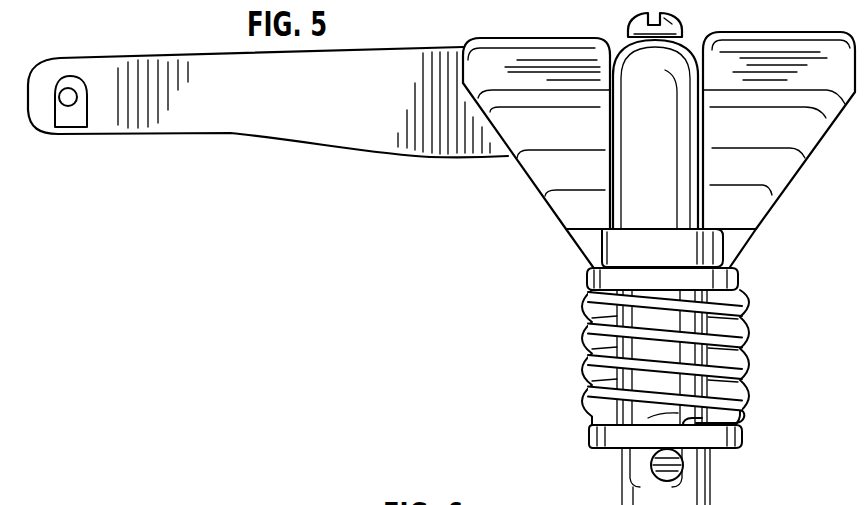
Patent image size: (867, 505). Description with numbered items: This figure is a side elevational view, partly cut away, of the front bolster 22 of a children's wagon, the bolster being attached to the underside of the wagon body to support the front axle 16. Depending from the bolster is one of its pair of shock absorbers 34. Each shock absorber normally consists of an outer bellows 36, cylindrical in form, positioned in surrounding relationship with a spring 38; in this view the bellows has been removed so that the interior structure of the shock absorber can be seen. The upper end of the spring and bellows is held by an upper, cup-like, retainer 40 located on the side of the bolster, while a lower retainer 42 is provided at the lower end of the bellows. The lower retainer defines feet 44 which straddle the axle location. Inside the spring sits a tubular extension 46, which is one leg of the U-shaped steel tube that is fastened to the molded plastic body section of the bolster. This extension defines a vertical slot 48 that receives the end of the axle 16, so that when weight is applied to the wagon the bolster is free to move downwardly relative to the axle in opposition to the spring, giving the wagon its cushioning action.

The front bolster 22 is at (200, 42).
The upper retainer 40 is at (737, 277).
The tubular extension 46 is at (586, 331).
The spring 38 is at (746, 325).
The shock absorber 34 is at (582, 359).
The outer bellows 36 is at (583, 388).
The vertical slot 48 is at (727, 420).
The lower retainer 42 is at (588, 428).
The feet 44 is at (708, 465).
The axle 16 is at (670, 470).